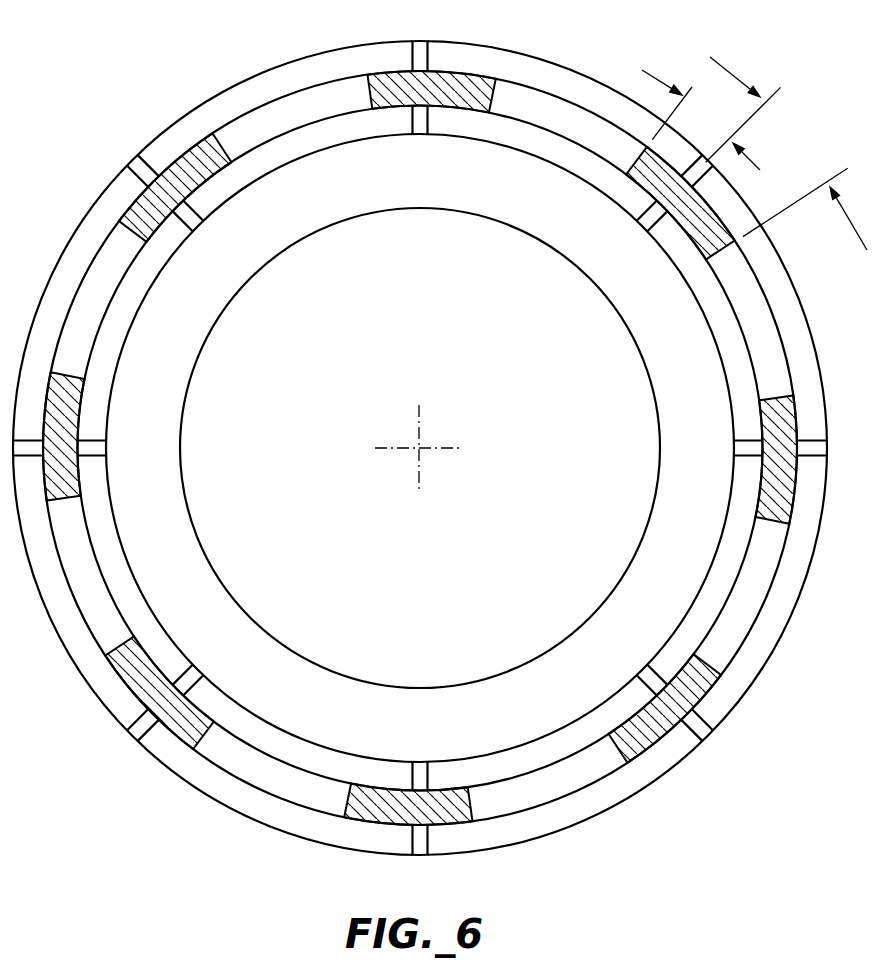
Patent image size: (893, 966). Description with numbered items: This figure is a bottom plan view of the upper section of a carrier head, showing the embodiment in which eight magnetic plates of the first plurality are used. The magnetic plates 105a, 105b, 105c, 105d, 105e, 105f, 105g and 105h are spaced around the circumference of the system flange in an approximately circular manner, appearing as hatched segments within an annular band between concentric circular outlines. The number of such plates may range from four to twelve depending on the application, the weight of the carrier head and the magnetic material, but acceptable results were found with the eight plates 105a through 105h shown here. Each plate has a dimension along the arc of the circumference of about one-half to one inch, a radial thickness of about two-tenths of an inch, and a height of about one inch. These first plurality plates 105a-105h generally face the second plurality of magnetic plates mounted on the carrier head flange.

The magnetic plate of the first plurality 105a is at (433, 104).
The magnetic plate of the first plurality 105b is at (710, 220).
The magnetic plate of the first plurality 105c is at (766, 508).
The magnetic plate of the first plurality 105d is at (700, 688).
The magnetic plate of the first plurality 105e is at (465, 808).
The magnetic plate of the first plurality 105f is at (142, 688).
The magnetic plate of the first plurality 105g is at (72, 490).
The magnetic plate of the first plurality 105h is at (131, 216).